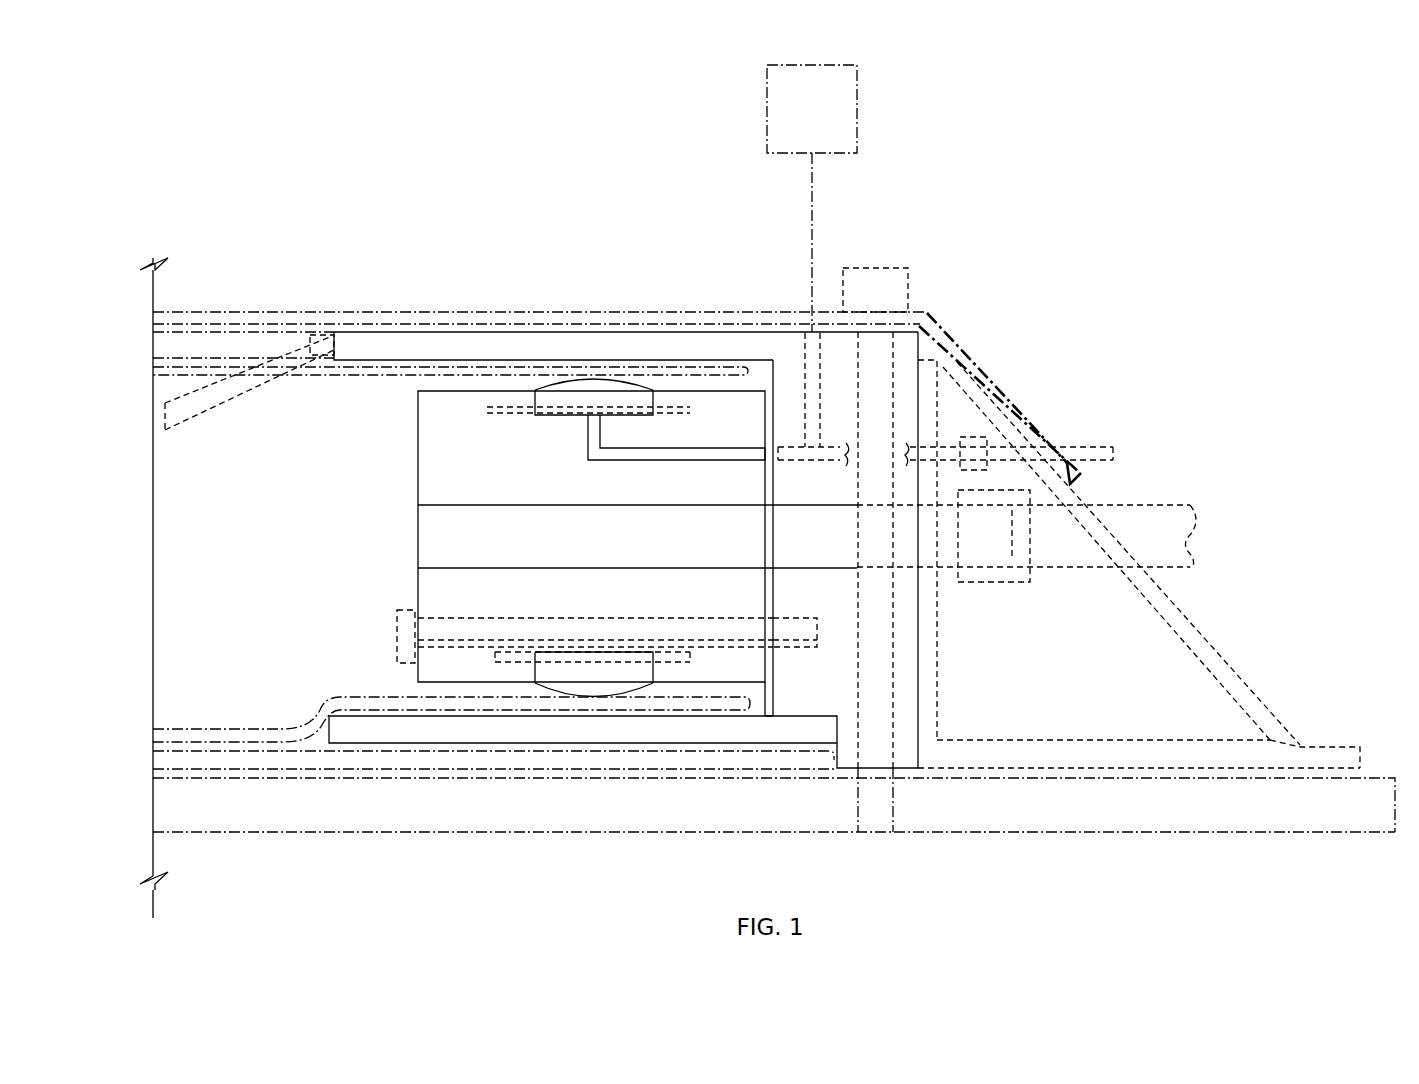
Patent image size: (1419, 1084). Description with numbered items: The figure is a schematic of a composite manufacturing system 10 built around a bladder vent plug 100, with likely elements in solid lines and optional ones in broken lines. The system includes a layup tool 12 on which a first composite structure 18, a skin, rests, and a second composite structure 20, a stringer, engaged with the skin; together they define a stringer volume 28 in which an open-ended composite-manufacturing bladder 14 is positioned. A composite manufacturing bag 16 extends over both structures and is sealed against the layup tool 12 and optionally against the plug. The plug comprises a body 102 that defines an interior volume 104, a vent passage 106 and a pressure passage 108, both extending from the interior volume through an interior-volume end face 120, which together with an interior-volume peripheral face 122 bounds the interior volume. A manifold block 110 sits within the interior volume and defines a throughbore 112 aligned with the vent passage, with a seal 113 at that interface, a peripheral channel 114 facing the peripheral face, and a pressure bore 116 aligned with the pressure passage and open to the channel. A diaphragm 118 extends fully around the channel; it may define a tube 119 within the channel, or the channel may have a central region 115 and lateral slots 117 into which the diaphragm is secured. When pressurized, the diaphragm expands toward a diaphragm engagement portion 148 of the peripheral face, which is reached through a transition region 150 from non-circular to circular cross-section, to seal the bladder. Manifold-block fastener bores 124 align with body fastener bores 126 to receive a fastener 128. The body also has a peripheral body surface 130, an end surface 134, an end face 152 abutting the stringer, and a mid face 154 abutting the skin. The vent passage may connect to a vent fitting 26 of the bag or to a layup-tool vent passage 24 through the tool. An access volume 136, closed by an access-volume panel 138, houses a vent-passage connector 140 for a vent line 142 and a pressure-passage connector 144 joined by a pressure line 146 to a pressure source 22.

The composite manufacturing system 10 is at (1098, 134).
The layup tool 12 is at (1282, 834).
The open-ended composite-manufacturing bladder 14 is at (215, 377).
The composite manufacturing bag 16 is at (240, 312).
The first composite structure 18 is at (234, 770).
The second composite structure 20 is at (232, 334).
The pressure source 22 is at (812, 109).
The layup-tool vent passage 24 is at (875, 800).
The vent fitting 26 is at (877, 272).
The stringer volume 28 is at (190, 585).
The bladder vent plug 100 is at (1062, 208).
The body 102 is at (463, 330).
The interior volume 104 is at (380, 532).
The vent passage 106 is at (880, 312).
The pressure passage 108 is at (955, 365).
The manifold block 110 is at (417, 452).
The throughbore 112 is at (465, 568).
The seal 113 is at (752, 482).
The peripheral channel 114 is at (565, 418).
The central region 115 is at (594, 392).
The pressure bore 116 is at (622, 456).
The lateral slots 117 is at (508, 420).
The diaphragm 118 is at (598, 385).
The tube 119 is at (617, 420).
The interior-volume end face 120 is at (768, 590).
The interior-volume peripheral face 122 is at (380, 715).
The manifold-block fastener bores 124 is at (485, 640).
The body fastener bores 126 is at (780, 640).
The fastener 128 is at (395, 620).
The peripheral body surface 130 is at (608, 328).
The end surface 134 is at (945, 400).
The access volume 136 is at (1190, 693).
The access-volume panel 138 is at (1272, 714).
The vent-passage connector 140 is at (1150, 600).
The vent line 142 is at (1190, 503).
The pressure-passage connector 144 is at (780, 340).
The pressure line 146 is at (815, 212).
The diaphragm engagement portion 148 is at (548, 365).
The transition region 150 is at (185, 430).
The end face 152 is at (310, 345).
The mid face 154 is at (805, 752).